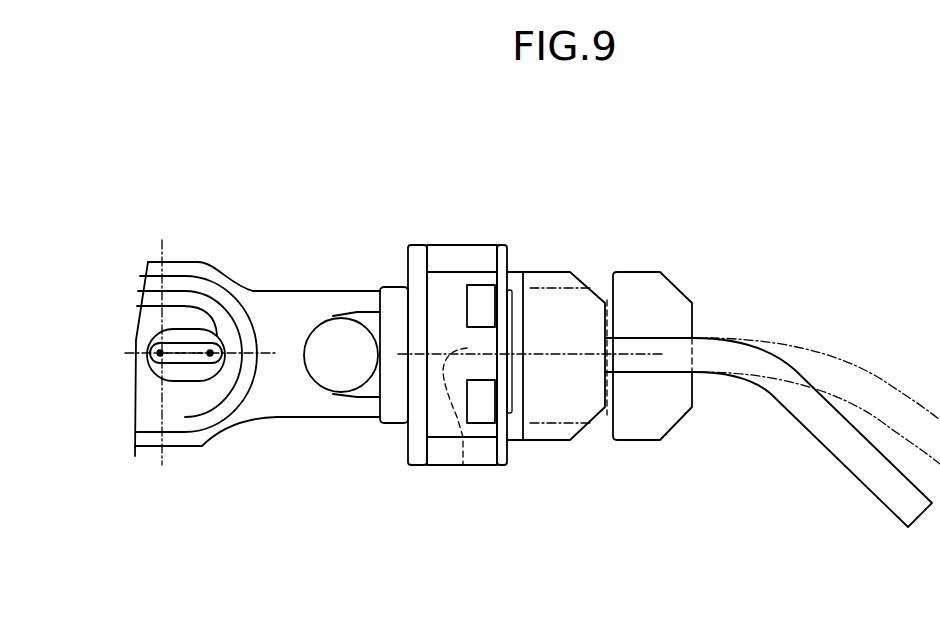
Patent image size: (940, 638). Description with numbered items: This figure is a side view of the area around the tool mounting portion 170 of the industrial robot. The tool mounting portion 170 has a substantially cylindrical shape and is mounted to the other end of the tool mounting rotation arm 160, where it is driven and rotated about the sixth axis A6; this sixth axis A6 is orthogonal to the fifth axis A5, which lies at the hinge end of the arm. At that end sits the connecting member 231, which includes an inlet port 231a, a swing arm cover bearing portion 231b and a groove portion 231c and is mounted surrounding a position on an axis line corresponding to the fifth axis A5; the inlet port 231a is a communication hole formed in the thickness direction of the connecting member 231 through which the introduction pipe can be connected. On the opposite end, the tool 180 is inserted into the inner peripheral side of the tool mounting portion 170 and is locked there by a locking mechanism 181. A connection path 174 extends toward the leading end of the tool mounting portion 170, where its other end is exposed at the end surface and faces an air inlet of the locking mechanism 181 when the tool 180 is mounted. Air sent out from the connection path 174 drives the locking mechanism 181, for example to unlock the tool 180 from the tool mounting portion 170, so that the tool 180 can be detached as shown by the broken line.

The tool mounting rotation arm 160 is at (307, 287).
The tool mounting portion 170 is at (463, 243).
The connection path 174 is at (463, 465).
The tool 180 is at (817, 462).
The locking mechanism 181 is at (552, 277).
The connecting member 231 is at (160, 353).
The inlet port 231a is at (213, 331).
The swing arm cover bearing portion 231b is at (160, 353).
The groove portion 231c is at (191, 338).
The fifth axis A5 is at (178, 381).
The sixth axis A6 is at (543, 354).